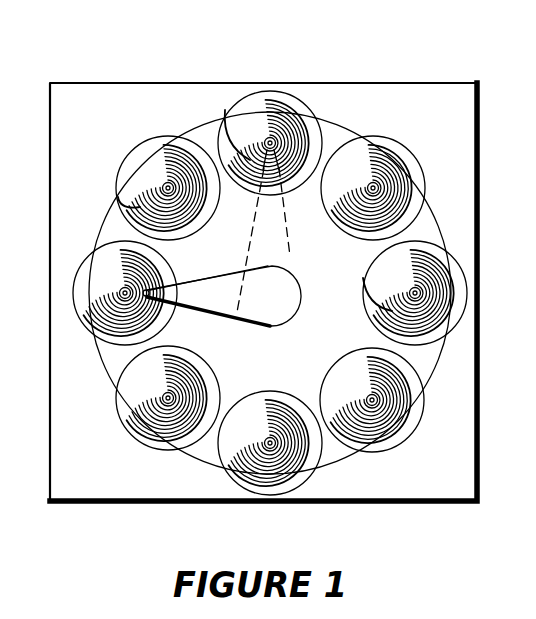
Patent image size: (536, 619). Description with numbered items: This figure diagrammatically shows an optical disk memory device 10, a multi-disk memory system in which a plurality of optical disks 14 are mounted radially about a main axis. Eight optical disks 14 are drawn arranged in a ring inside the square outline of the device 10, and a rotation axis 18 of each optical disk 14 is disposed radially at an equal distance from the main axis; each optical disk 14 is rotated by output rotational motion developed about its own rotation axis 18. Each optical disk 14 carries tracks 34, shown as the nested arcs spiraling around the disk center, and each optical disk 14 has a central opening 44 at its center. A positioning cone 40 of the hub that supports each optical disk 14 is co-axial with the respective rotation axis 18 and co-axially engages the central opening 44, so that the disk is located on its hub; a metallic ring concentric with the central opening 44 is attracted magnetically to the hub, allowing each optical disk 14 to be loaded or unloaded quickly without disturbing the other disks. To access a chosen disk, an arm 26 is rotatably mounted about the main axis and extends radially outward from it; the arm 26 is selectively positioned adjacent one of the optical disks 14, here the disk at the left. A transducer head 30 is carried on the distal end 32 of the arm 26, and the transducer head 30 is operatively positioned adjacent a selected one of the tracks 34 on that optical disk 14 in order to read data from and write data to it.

The optical disk memory device 10 is at (421, 80).
The optical disk 14 is at (162, 152).
The rotation axis 18 is at (474, 278).
The arm 26 is at (228, 318).
The transducer head 30 is at (175, 308).
The distal end 32 is at (185, 297).
The tracks 34 is at (232, 116).
The positioning cone 40 is at (175, 187).
The central opening 44 is at (131, 289).